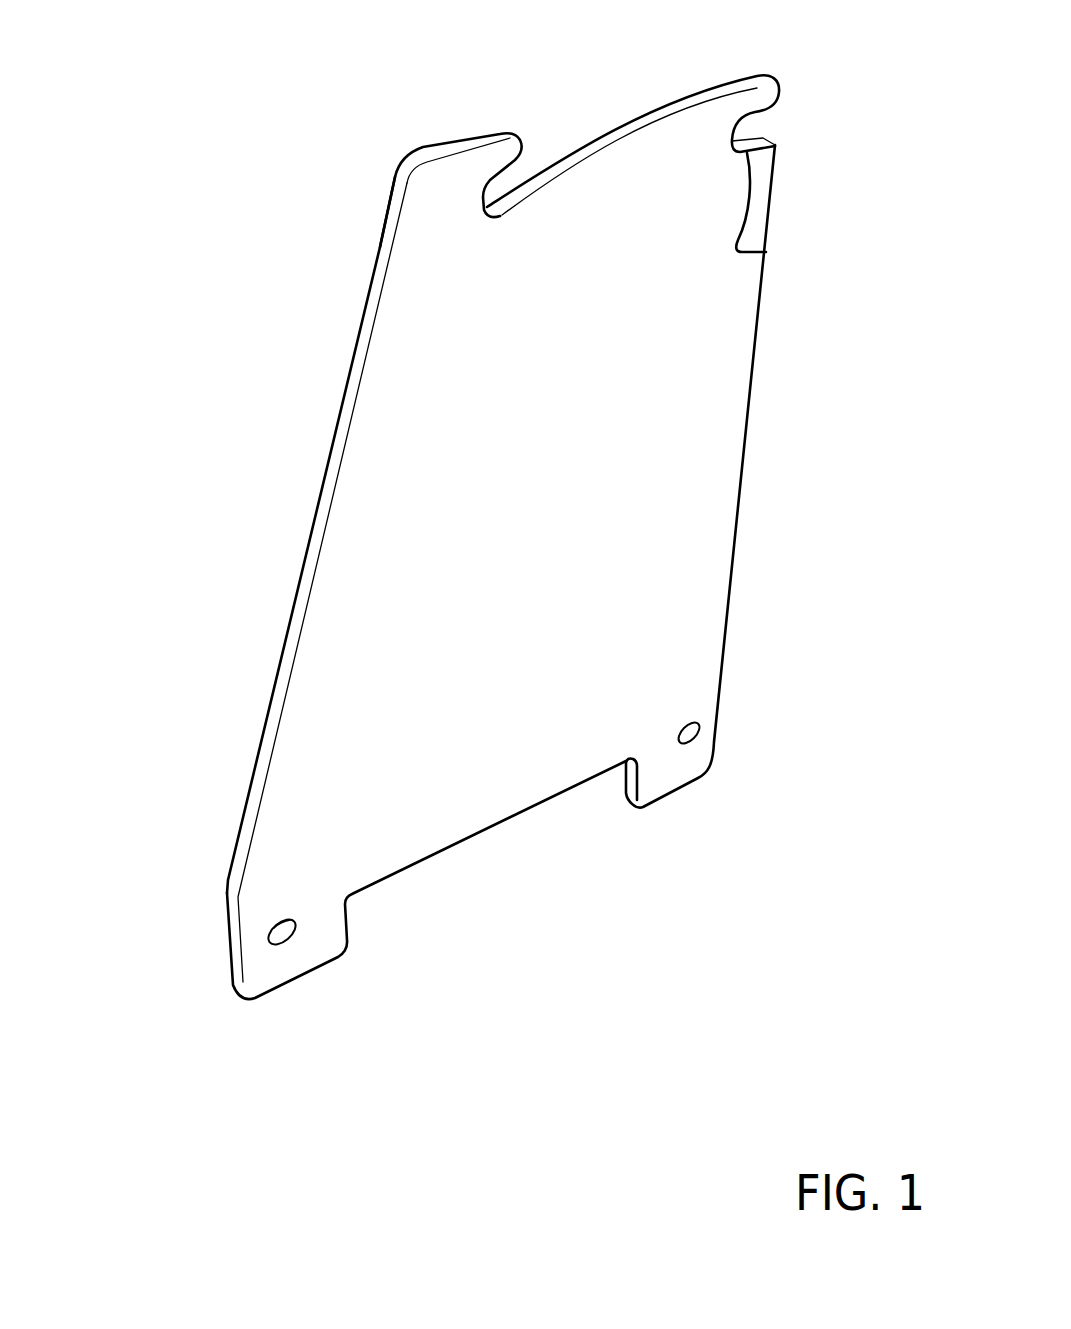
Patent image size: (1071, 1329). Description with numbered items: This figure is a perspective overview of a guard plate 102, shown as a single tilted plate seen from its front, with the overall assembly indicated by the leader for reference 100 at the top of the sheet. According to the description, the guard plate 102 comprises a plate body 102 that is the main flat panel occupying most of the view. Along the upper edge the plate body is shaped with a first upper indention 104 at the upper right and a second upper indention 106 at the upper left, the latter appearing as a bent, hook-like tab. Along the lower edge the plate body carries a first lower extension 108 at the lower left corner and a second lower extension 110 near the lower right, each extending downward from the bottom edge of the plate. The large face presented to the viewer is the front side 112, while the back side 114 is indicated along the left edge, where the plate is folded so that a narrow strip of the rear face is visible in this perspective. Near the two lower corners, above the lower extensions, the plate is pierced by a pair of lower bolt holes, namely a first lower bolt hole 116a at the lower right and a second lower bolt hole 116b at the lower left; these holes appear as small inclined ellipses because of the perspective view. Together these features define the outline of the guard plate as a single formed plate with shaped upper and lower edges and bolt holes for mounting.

The mounting bracket 100 is at (302, 74).
The guard plate 102 is at (370, 550).
The first upper indention 104 is at (658, 176).
The second upper indention 106 is at (483, 198).
The first lower extension 108 is at (258, 963).
The second lower extension 110 is at (677, 777).
The front side 112 is at (321, 660).
The back side 114 is at (291, 557).
The first lower bolt hole 116a is at (700, 720).
The second lower bolt hole 116b is at (275, 916).